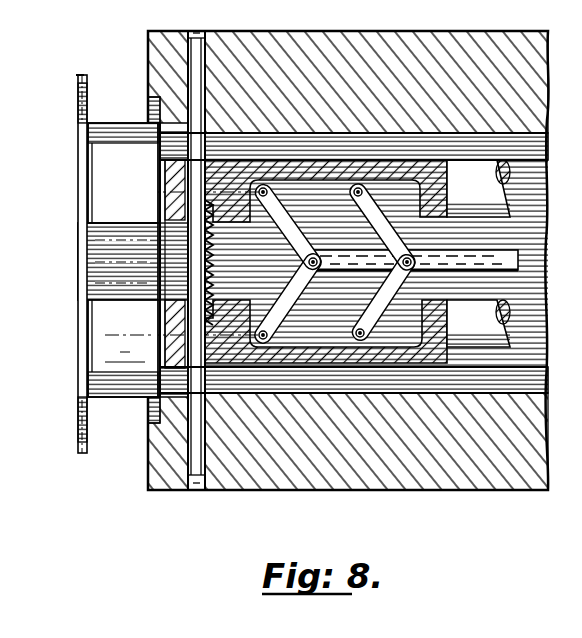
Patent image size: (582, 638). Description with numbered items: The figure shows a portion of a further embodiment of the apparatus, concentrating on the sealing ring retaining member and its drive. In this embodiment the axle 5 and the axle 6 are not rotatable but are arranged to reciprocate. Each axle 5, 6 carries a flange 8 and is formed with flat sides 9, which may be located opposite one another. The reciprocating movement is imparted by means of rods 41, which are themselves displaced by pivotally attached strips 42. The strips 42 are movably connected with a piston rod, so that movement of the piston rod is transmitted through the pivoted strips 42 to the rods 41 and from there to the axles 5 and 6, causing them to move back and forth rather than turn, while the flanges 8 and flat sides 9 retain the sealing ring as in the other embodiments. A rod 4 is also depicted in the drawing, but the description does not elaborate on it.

The rod 4 is at (413, 258).
The rotatable axle 5 is at (128, 145).
The rotatable axle 6 is at (122, 385).
The flange 8 is at (78, 110).
The flat sides 9 is at (100, 300).
The rods 41 is at (420, 333).
The pivotally attached strips 42 is at (427, 215).